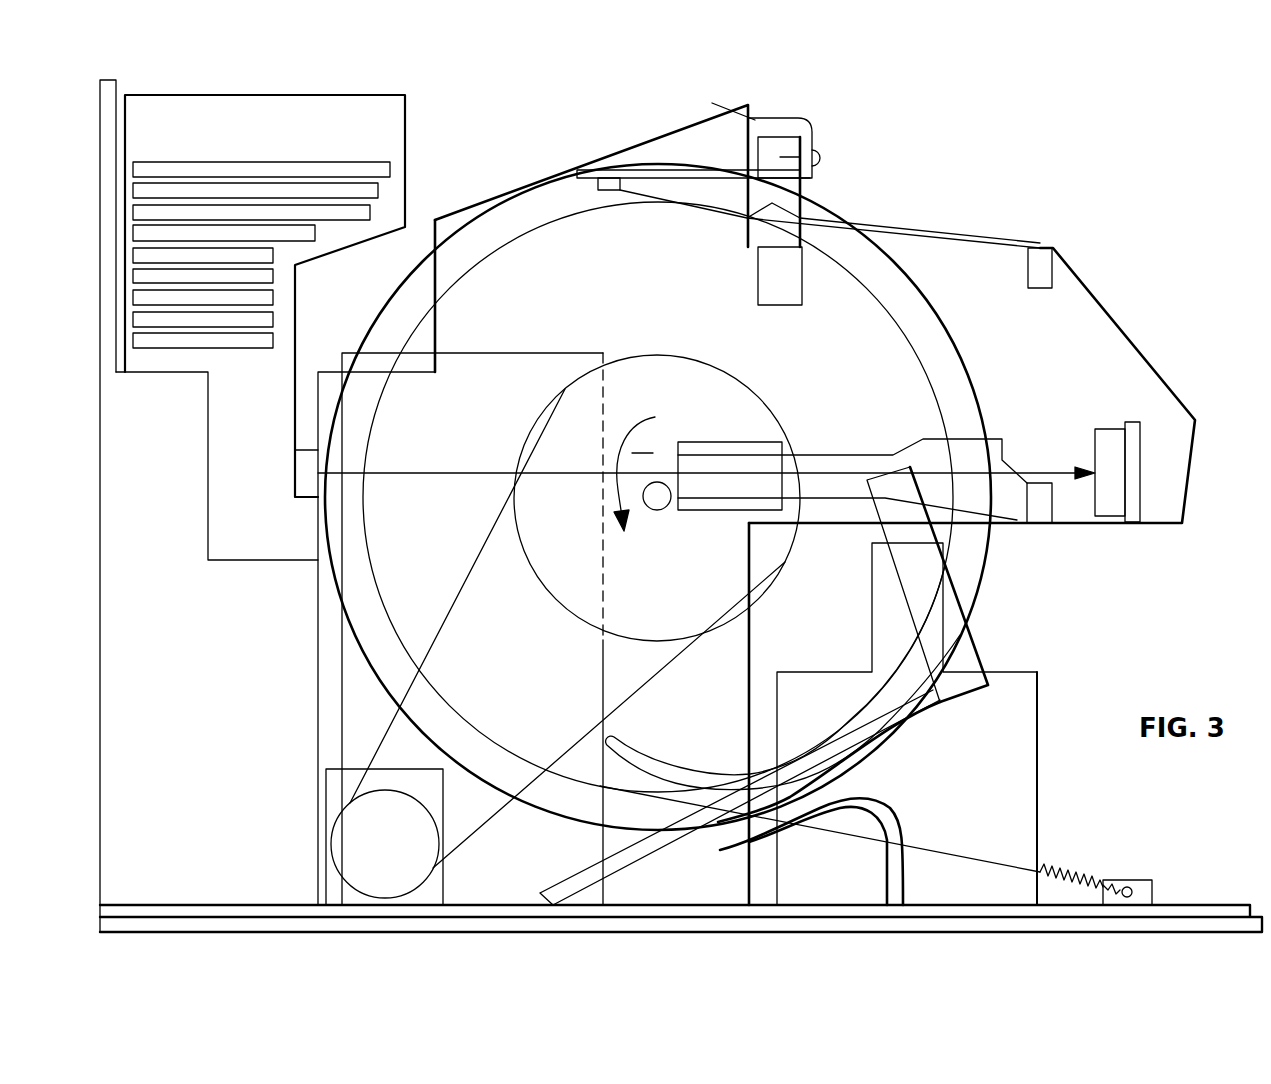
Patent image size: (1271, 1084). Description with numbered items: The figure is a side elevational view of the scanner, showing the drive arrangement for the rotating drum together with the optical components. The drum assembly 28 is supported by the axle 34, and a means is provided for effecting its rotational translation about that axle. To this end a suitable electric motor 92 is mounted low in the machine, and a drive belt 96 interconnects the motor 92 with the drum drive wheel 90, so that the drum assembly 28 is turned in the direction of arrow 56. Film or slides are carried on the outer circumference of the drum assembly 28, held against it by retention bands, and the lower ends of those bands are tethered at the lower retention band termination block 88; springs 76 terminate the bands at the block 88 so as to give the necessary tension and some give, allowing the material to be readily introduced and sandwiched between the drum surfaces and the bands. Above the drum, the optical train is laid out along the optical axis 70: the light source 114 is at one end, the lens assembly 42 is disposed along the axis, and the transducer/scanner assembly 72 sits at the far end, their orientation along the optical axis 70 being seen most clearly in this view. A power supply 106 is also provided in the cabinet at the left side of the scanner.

The drum assembly 28 is at (841, 365).
The axle 34 is at (664, 512).
The lens assembly 42 is at (832, 455).
The arrow 56 is at (647, 466).
The optical axis 70 is at (452, 470).
The transducer/scanner assembly 72 is at (1088, 426).
The springs 76 is at (1080, 875).
The lower retention band termination block 88 is at (1147, 880).
The drum drive wheel 90 is at (697, 355).
The electric motor 92 is at (372, 853).
The drive belt 96 is at (482, 543).
The power supply 106 is at (175, 630).
The light source 114 is at (302, 473).